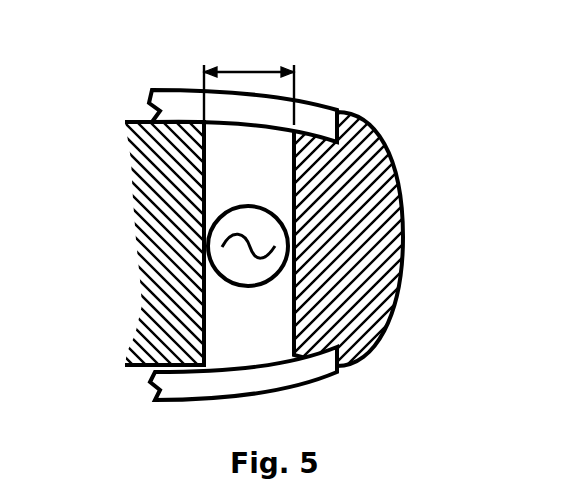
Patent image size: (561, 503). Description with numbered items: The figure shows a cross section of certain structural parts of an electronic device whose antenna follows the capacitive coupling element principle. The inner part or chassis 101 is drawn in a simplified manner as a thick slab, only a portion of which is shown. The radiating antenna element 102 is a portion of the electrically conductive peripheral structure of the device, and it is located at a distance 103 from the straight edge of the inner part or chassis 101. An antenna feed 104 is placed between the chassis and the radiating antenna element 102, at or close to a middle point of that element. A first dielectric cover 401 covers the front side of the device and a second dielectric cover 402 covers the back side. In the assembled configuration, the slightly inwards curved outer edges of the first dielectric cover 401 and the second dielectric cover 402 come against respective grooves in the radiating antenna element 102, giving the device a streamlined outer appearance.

The inner part or chassis 101 is at (126, 122).
The radiating antenna element 102 is at (381, 347).
The distance 103 is at (249, 86).
The antenna feed 104 is at (235, 216).
The first dielectric cover 401 is at (155, 400).
The second dielectric cover 402 is at (152, 90).